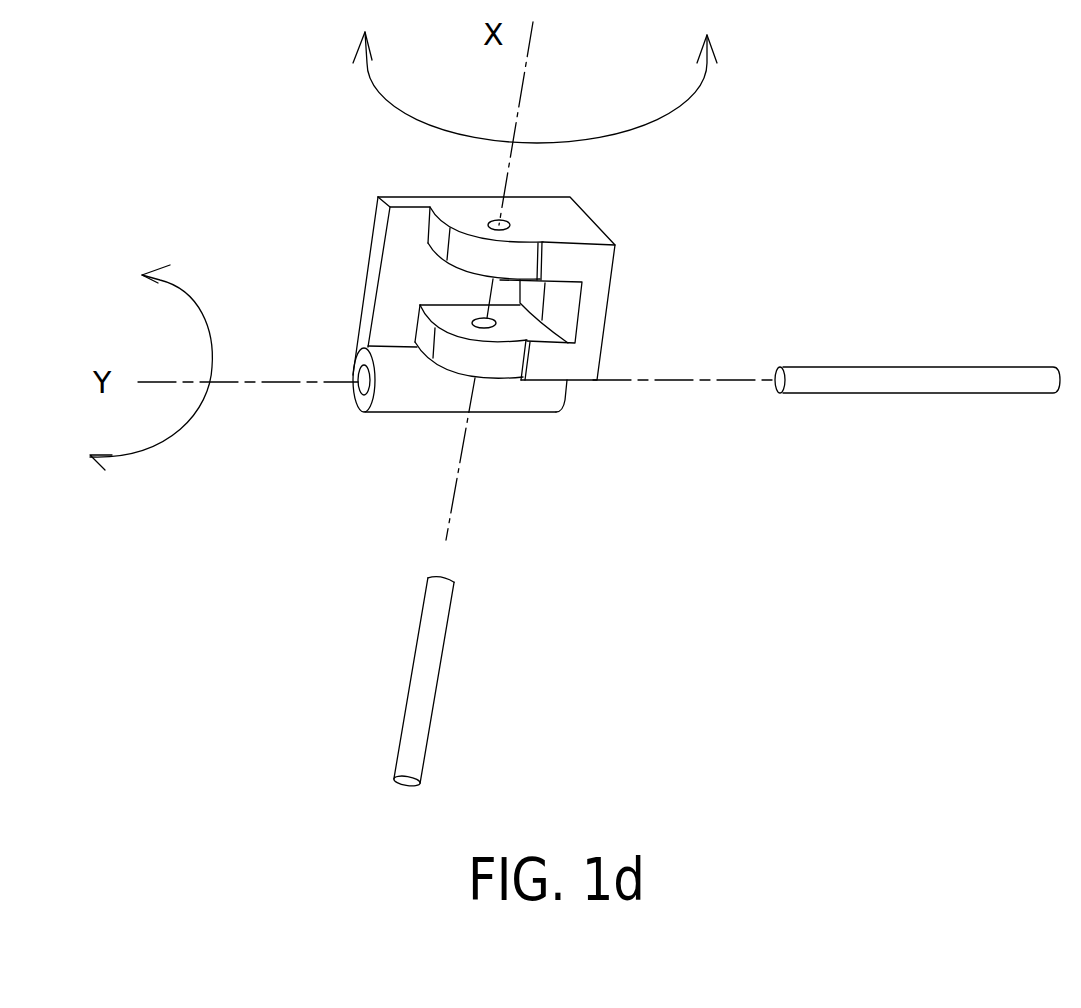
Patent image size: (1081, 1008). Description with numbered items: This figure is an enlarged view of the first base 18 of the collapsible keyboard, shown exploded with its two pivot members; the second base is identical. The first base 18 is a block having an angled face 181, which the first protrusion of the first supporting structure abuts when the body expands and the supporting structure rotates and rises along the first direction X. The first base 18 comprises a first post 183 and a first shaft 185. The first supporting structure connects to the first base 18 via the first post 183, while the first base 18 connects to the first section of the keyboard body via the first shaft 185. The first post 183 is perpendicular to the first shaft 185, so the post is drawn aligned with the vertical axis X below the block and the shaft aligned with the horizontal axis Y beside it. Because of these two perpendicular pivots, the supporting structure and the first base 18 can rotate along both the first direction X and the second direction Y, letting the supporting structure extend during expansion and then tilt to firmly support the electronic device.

The first base 18 is at (573, 223).
The angled face 181 is at (563, 312).
The first post 183 is at (430, 660).
The first shaft 185 is at (923, 380).